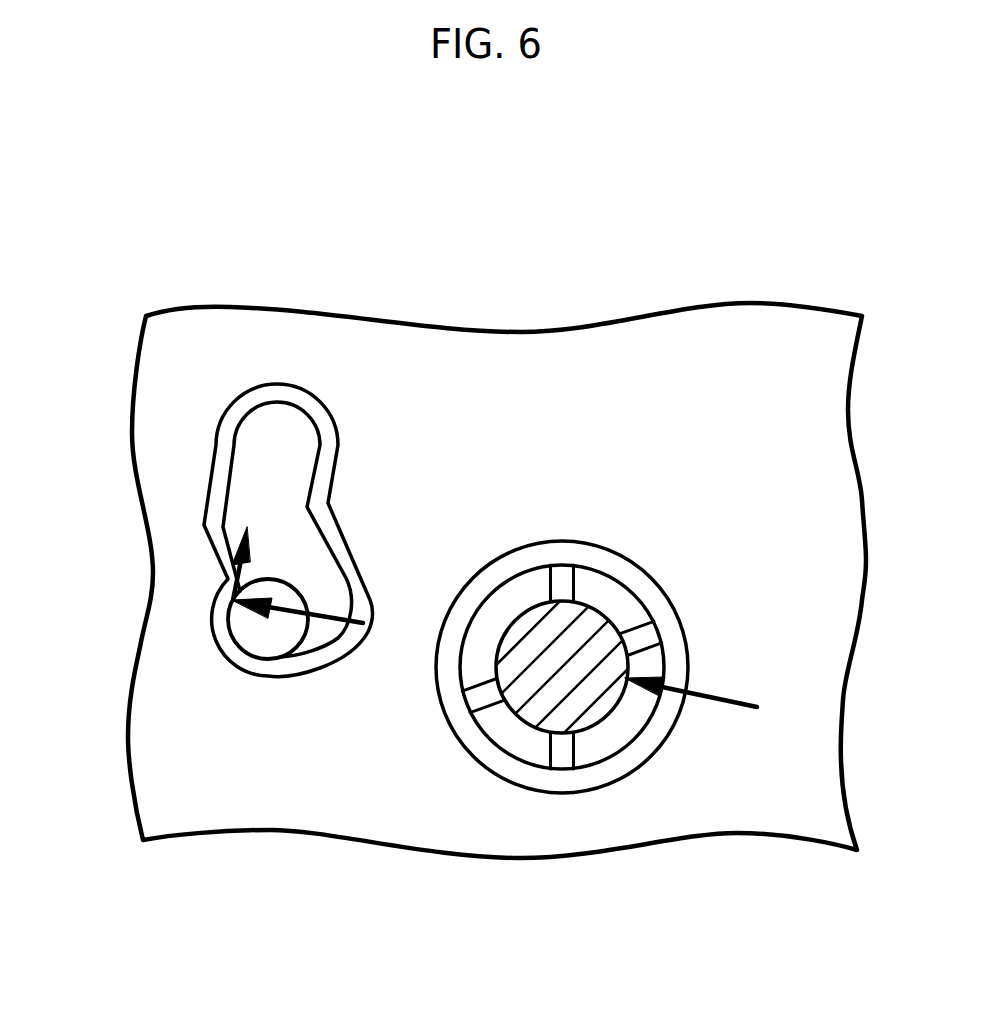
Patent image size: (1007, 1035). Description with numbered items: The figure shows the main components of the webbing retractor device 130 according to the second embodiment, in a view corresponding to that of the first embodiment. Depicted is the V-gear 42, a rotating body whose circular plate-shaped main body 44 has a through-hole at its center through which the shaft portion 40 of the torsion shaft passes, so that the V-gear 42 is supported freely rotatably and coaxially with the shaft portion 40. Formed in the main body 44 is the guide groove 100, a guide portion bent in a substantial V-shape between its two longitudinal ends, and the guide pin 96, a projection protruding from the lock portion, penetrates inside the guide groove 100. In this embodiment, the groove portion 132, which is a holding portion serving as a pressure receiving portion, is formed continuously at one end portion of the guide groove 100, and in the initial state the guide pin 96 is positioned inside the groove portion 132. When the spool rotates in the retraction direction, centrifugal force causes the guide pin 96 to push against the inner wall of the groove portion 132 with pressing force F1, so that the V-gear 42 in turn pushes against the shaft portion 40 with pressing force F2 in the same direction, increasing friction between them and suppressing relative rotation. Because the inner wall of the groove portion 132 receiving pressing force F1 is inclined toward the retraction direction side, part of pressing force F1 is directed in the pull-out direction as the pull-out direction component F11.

The webbing retractor device 130 is at (666, 194).
The main body 44 is at (616, 336).
The V-gear 42 is at (497, 539).
The guide groove 100 is at (316, 470).
The groove portion 132 is at (308, 645).
The guide pin 96 is at (266, 642).
The shaft portion 40 is at (590, 624).
The pressing force F1 is at (345, 577).
The pull-out direction component F11 is at (224, 576).
The pressing force F2 is at (722, 708).